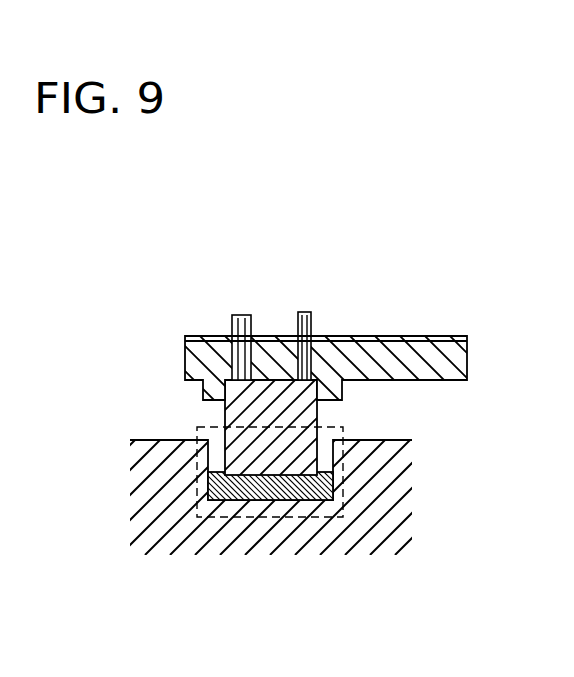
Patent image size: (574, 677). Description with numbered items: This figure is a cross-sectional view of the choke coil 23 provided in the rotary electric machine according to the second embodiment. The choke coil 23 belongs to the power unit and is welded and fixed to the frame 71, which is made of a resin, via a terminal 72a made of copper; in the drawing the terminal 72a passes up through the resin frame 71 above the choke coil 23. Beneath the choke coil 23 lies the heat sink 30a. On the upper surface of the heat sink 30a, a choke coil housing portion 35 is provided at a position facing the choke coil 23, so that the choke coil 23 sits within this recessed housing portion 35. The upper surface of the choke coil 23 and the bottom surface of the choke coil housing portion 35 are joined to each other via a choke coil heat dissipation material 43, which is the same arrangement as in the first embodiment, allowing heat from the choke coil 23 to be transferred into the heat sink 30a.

The choke coil 23 is at (266, 408).
The heat sink 30a is at (394, 538).
The choke coil housing portion 35 is at (266, 505).
The choke coil heat dissipation material 43 is at (343, 502).
The frame 71 is at (423, 368).
The terminal 72a is at (408, 337).